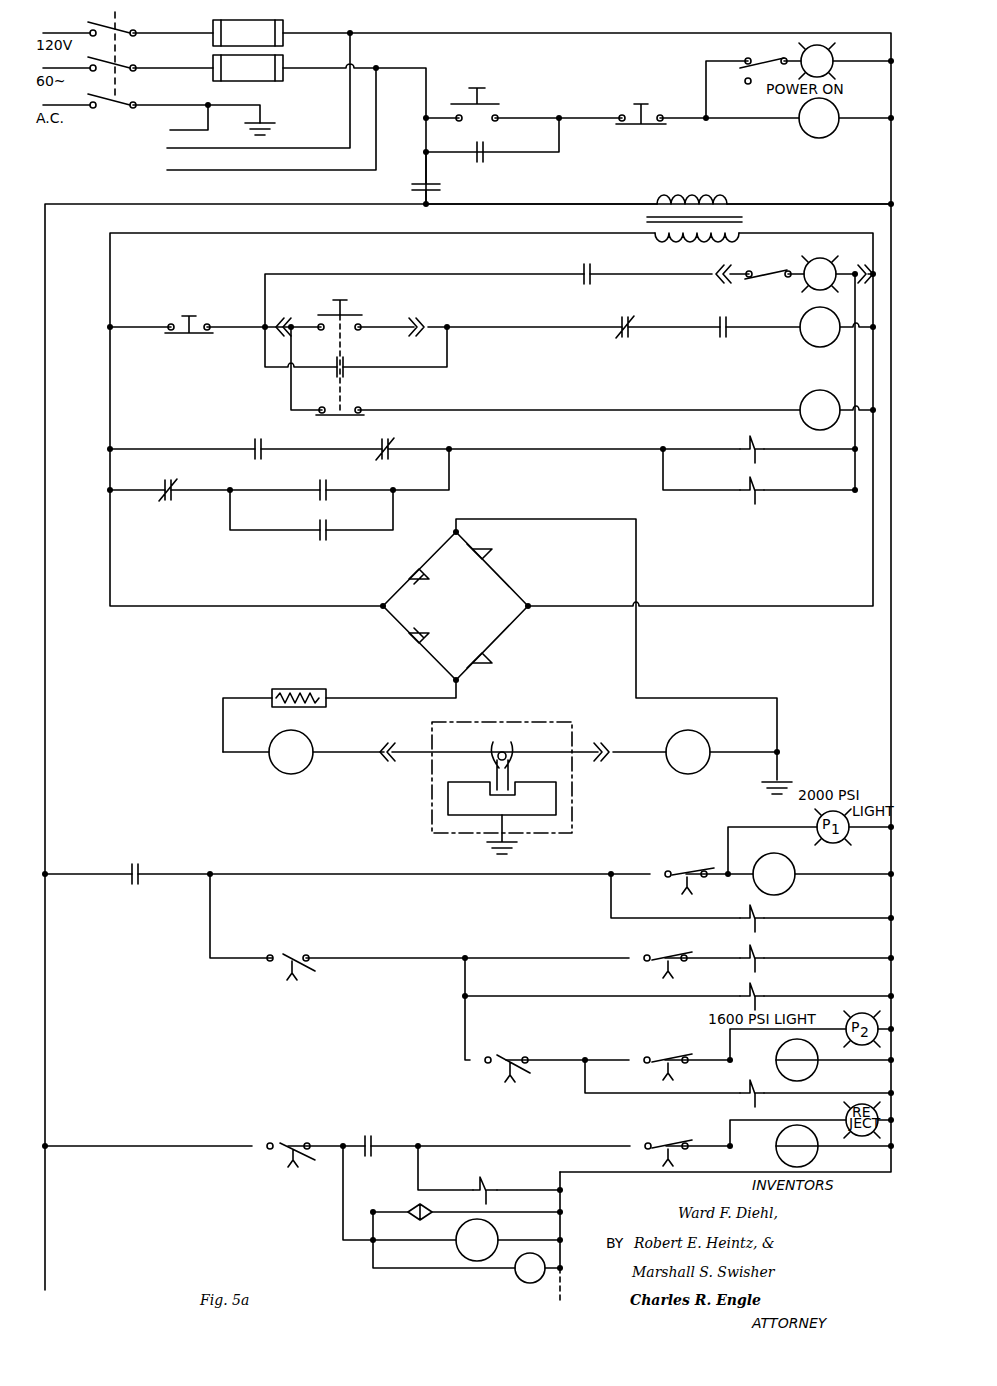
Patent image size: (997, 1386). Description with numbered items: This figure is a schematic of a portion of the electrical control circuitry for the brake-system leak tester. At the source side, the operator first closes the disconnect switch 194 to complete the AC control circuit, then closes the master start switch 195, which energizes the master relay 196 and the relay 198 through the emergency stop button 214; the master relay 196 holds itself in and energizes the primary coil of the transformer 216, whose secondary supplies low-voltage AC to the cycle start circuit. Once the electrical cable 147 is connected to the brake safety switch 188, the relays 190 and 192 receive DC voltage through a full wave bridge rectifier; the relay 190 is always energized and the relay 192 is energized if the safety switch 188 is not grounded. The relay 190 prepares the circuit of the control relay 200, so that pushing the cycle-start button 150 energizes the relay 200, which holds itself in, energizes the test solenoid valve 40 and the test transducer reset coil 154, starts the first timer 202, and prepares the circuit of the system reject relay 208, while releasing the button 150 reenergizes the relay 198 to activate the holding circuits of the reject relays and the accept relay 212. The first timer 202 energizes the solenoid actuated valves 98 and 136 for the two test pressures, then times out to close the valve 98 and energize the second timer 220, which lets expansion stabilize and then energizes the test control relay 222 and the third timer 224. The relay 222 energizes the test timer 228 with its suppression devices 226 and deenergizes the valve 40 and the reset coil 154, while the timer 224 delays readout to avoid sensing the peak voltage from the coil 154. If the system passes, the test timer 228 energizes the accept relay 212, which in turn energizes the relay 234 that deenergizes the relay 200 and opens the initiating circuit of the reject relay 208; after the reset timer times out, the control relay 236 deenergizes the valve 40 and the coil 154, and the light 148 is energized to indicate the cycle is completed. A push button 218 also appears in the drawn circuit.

The disconnect switch 194 is at (117, 107).
The master start switch 195 is at (490, 103).
The master relay 196 is at (486, 156).
The emergency stop button 214 is at (640, 100).
The transformer 216 is at (727, 196).
The push button 218 is at (188, 314).
The cycle-start button 150 is at (345, 300).
The control relay 200 is at (345, 364).
The suppression devices 226 is at (580, 286).
The light 148 is at (810, 260).
The relay 190 is at (716, 320).
The relay 234 is at (619, 340).
The relay 198 is at (802, 398).
The test solenoid valve 40 is at (750, 448).
The test transducer reset coil 154 is at (756, 487).
The test control relay 222 is at (392, 444).
The system reject relay 208 is at (329, 488).
The control relay 236 is at (163, 501).
The accept relay 212 is at (318, 540).
The electrical cable 147 is at (385, 762).
The brake safety switch 188 is at (432, 812).
The relay 192 is at (690, 768).
The first timer 202 is at (688, 870).
The solenoid actuated valve 98 is at (757, 952).
The solenoid actuated valve 136 is at (712, 976).
The second timer 220 is at (672, 1055).
The test timer 228 is at (672, 1143).
The third timer 224 is at (530, 1283).